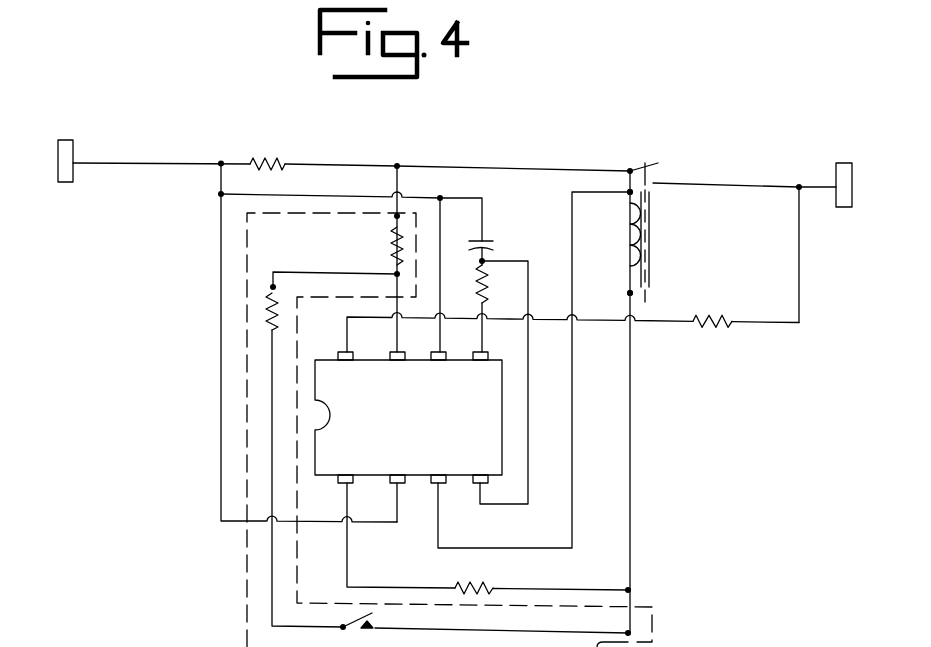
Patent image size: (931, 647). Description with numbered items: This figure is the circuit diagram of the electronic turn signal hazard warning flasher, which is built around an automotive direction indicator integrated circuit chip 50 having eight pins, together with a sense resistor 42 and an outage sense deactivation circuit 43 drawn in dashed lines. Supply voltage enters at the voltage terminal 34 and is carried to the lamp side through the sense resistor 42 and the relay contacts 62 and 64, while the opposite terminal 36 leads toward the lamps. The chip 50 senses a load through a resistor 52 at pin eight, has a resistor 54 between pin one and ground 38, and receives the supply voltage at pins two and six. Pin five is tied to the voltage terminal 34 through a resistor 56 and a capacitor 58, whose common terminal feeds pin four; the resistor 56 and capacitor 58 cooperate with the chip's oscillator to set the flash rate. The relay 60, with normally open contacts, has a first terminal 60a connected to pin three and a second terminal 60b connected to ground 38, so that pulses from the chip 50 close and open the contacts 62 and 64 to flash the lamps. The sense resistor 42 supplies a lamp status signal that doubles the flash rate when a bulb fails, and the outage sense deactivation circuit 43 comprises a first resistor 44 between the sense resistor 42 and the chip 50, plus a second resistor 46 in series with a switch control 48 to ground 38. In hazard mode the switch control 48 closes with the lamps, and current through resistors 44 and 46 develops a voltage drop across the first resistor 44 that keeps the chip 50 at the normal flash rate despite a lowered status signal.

The voltage terminal 34 is at (74, 141).
The second terminal 36 is at (842, 163).
The ground 38 is at (655, 646).
The sense resistor 42 is at (269, 159).
The outage sense deactivation circuit 43 is at (246, 445).
The first resistor 44 is at (392, 248).
The second resistor 46 is at (273, 287).
The switch control 48 is at (352, 630).
The automotive direction indicator integrated circuit chip 50 is at (425, 432).
The resistor 52 is at (710, 318).
The resistor 54 is at (481, 586).
The resistor 56 is at (493, 287).
The capacitor 58 is at (490, 239).
The relay 60 is at (625, 248).
The first terminal 60a is at (628, 195).
The second terminal 60b is at (627, 293).
The contact 62 is at (631, 168).
The contact 64 is at (653, 184).